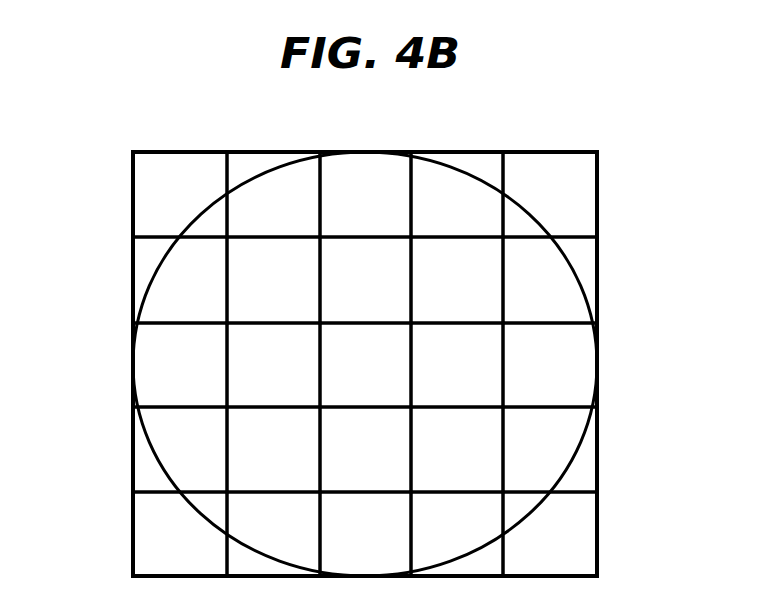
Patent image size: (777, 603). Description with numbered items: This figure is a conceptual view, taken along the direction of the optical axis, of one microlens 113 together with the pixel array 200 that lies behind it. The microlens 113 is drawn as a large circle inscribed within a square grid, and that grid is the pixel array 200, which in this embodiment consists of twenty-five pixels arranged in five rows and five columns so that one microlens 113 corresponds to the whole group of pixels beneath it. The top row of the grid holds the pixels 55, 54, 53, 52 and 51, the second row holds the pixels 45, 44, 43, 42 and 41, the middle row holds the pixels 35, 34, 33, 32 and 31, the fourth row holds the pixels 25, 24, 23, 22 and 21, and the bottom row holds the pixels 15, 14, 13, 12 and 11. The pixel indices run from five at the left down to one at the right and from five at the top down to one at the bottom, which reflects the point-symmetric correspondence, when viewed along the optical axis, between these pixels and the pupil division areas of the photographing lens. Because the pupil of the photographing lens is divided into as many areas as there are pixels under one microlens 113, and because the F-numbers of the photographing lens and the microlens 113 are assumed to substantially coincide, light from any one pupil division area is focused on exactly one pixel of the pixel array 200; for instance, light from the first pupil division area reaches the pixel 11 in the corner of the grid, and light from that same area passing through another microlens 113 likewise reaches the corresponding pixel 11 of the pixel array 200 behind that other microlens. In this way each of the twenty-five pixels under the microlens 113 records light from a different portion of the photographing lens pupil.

The pixel array 200 is at (421, 364).
The microlens 113 is at (140, 300).
The pixel p55 55 is at (180, 194).
The pixel p54 54 is at (273, 194).
The pixel p53 53 is at (365, 194).
The pixel p52 52 is at (457, 194).
The pixel p51 51 is at (550, 194).
The pixel p45 45 is at (180, 280).
The pixel p44 44 is at (273, 280).
The pixel p43 43 is at (365, 280).
The pixel p42 42 is at (457, 280).
The pixel p41 41 is at (550, 280).
The pixel p35 35 is at (180, 365).
The pixel p34 34 is at (273, 365).
The pixel p33 33 is at (365, 365).
The pixel p32 32 is at (457, 365).
The pixel p31 31 is at (550, 365).
The pixel p25 25 is at (180, 449).
The pixel p24 24 is at (273, 449).
The pixel p23 23 is at (365, 449).
The pixel p22 22 is at (457, 449).
The pixel p21 21 is at (550, 449).
The pixel p15 15 is at (180, 534).
The pixel p14 14 is at (273, 534).
The pixel p13 13 is at (365, 534).
The pixel p12 12 is at (457, 534).
The pixel p11 11 is at (550, 534).